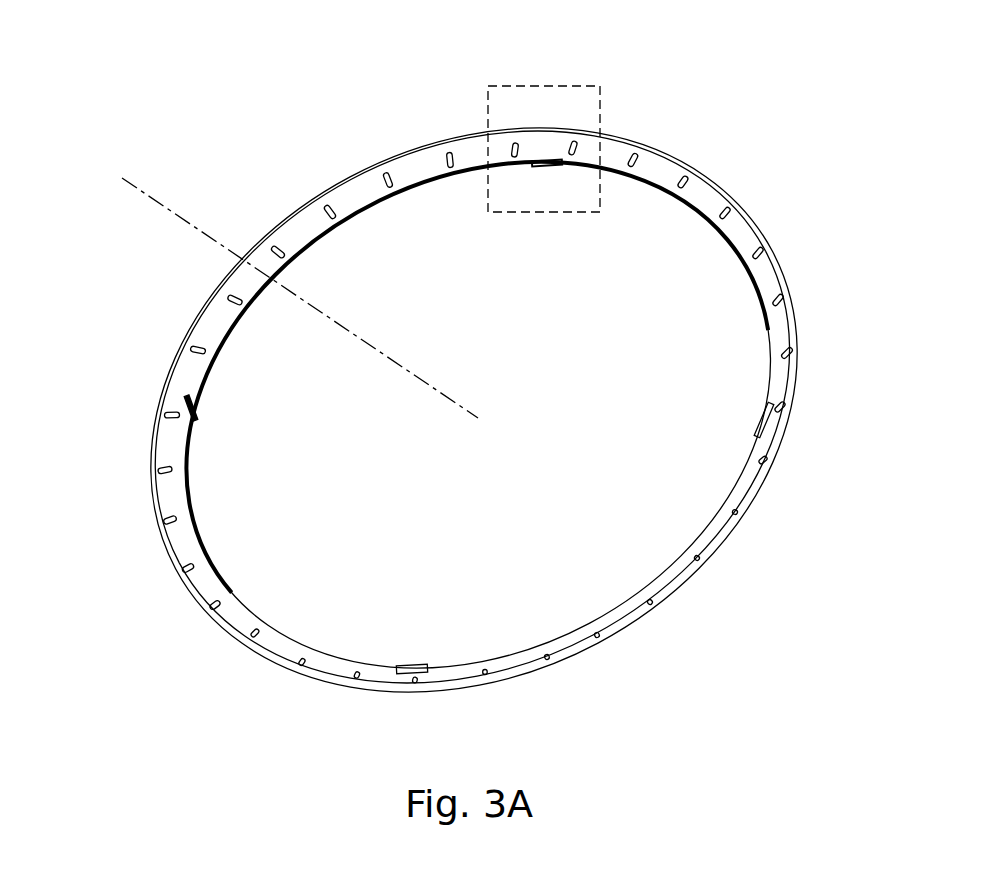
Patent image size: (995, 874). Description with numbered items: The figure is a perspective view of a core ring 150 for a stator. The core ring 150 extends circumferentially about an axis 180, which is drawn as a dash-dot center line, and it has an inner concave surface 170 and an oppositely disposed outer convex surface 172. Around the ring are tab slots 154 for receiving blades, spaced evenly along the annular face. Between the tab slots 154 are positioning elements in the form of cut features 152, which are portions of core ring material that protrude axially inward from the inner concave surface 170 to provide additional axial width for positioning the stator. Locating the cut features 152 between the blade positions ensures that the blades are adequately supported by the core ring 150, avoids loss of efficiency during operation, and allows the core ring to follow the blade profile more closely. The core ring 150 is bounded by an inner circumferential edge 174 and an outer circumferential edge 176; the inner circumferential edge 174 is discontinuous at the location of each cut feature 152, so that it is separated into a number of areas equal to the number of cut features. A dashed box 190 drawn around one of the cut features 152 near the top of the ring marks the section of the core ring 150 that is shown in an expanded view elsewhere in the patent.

The core ring 150 is at (250, 162).
The cut feature 152 is at (542, 166).
The tab slots 154 is at (757, 258).
The inner concave surface 170 is at (192, 372).
The outer convex surface 172 is at (706, 583).
The inner circumferential edge 174 is at (197, 530).
The outer circumferential edge 176 is at (742, 208).
The axis 180 is at (367, 340).
The box 190 is at (543, 86).